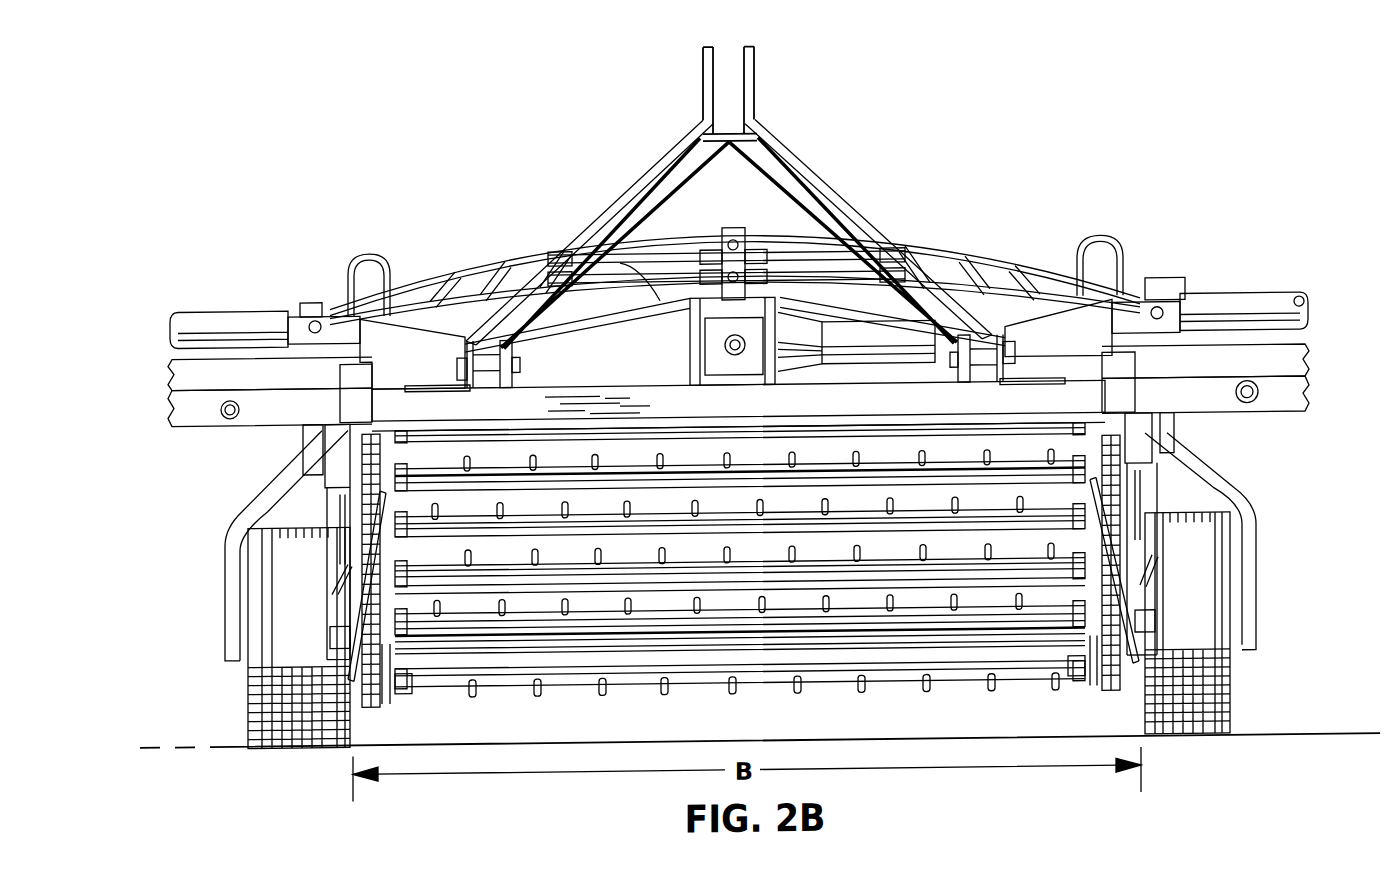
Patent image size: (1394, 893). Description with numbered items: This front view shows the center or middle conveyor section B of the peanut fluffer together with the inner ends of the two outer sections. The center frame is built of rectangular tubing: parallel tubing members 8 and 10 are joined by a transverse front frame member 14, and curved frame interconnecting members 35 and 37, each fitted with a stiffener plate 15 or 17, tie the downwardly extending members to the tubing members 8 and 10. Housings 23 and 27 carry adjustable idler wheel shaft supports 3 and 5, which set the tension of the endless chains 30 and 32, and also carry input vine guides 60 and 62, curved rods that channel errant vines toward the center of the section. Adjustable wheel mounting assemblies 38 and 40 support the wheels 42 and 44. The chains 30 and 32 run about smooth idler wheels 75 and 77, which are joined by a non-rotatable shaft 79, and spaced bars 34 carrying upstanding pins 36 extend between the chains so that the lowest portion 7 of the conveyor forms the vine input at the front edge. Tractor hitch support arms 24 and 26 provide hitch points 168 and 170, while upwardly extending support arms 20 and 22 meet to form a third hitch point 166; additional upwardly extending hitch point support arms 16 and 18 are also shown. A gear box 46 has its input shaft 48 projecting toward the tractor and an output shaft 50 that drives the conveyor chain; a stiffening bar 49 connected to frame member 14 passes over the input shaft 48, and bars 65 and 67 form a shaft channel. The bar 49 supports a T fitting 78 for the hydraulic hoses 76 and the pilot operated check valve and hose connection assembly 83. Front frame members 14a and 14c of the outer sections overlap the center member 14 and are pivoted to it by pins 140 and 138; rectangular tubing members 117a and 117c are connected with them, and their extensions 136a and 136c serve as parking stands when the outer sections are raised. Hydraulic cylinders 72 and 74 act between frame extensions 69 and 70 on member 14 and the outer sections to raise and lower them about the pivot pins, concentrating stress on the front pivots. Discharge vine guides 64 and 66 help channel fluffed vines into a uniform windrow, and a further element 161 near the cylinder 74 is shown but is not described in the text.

The adjustable idler wheel shaft support 3 is at (330, 630).
The adjustable idler wheel shaft support 5 is at (1150, 625).
The lowest portion of the endless conveyor 7 is at (565, 688).
The rectangular tubing member 8 is at (335, 448).
The rectangular tubing member 10 is at (1140, 440).
The transverse rectangular tubing member 14 is at (625, 385).
The front frame member 14a is at (180, 408).
The front frame member 14c is at (1300, 405).
The stiffener plate 15 is at (332, 592).
The upwardly extending hitch point support arm 16 is at (602, 212).
The stiffener plate 17 is at (1148, 585).
The upwardly extending hitch point support arm 18 is at (870, 207).
The upwardly extending support arm 20 is at (683, 150).
The upwardly extending support arm 22 is at (778, 143).
The housing 23 is at (335, 625).
The tractor hitch support arm 24 is at (520, 348).
The tractor hitch support arm 26 is at (990, 380).
The housing 27 is at (1155, 607).
The endless chain 30 is at (405, 678).
The endless chain 32 is at (1078, 665).
The spaced bar 34 is at (806, 575).
The curved frame interconnecting member 35 is at (335, 543).
The upstanding pin 36 is at (724, 556).
The curved frame interconnecting member 37 is at (1142, 539).
The adjustable wheel mounting assembly 38 is at (225, 571).
The adjustable wheel mounting assembly 40 is at (1258, 540).
The wheel 42 is at (258, 690).
The wheel 44 is at (1220, 680).
The gear box 46 is at (735, 360).
The input shaft 48 is at (725, 342).
The stiffening bar 49 is at (618, 300).
The output shaft 50 is at (910, 339).
The vine guide 60 is at (395, 546).
The vine guide 62 is at (1095, 525).
The discharge vine guide 64 is at (360, 258).
The bar 65 is at (690, 362).
The discharge vine guide 66 is at (1112, 250).
The bar 67 is at (788, 352).
The frame extension 69 is at (425, 325).
The frame extension 70 is at (1025, 325).
The hydraulic cylinder 72 is at (228, 310).
The hydraulic cylinder 74 is at (1225, 305).
The idler wheel 75 is at (386, 688).
The hydraulic hoses 76 is at (445, 295).
The idler wheel 77 is at (1100, 670).
The T fitting 78 is at (760, 250).
The non-rotatable shaft 79 is at (713, 650).
The pilot operated check valve and hose connection assembly 83 is at (733, 228).
The rectangular tubing member 117a is at (180, 358).
The rectangular tubing member 117c is at (1300, 358).
The extension 136a is at (500, 425).
The extension 136c is at (955, 400).
The pivot pin 138 is at (1255, 405).
The pivot pin 140 is at (225, 415).
The tab 161 is at (1172, 290).
The third hitch point 166 is at (756, 52).
The hitch point 168 is at (456, 364).
The hitch point 170 is at (1018, 360).